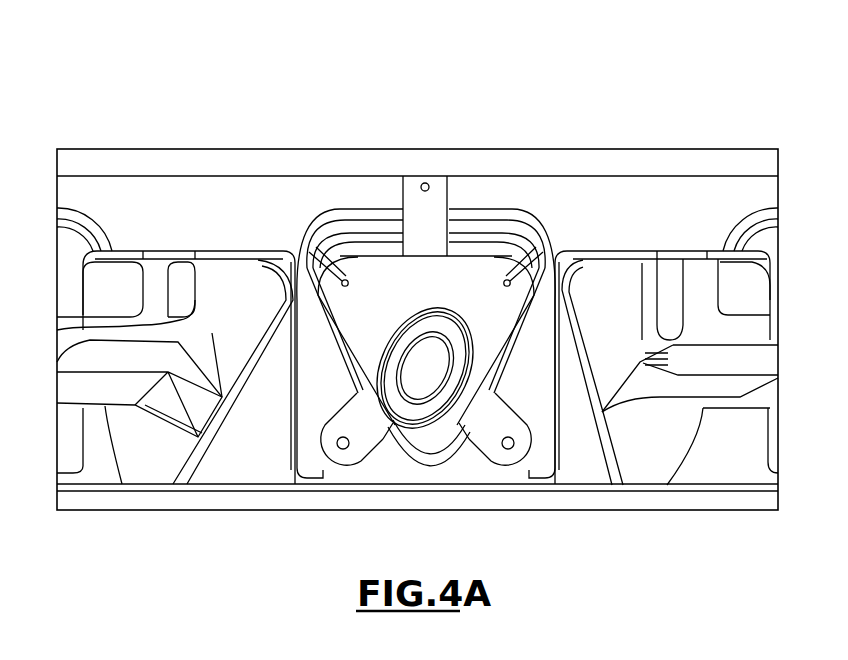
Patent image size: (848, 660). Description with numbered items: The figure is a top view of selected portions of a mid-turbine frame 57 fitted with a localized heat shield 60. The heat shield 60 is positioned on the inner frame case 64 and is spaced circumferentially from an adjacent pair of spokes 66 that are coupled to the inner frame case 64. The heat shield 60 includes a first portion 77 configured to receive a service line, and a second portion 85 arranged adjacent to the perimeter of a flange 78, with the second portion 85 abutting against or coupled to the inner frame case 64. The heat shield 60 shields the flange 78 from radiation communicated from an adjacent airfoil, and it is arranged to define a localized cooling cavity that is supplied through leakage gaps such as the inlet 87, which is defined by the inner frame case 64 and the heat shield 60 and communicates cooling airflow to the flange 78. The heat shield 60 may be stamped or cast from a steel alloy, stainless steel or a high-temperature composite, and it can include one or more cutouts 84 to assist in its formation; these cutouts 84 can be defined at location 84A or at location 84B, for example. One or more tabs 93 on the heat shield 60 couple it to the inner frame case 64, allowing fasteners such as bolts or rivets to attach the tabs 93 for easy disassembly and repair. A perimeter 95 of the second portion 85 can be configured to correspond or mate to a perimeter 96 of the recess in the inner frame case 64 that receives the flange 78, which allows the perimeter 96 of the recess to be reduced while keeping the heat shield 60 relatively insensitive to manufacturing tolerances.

The mid-turbine frame 57 is at (82, 86).
The inner frame case 64 is at (75, 196).
The spokes 66 is at (77, 383).
The cutout location 84A is at (318, 250).
The cutouts 84 is at (535, 250).
The cutout location 84B is at (362, 367).
The perimeter of the second portion 95 is at (362, 242).
The first portion 77 is at (463, 267).
The heat shield 60 is at (498, 234).
The second portion 85 is at (350, 360).
The flange 78 is at (390, 425).
The tabs 93 is at (336, 462).
The perimeter of the recess 96 is at (424, 468).
The inlet 87 is at (444, 466).